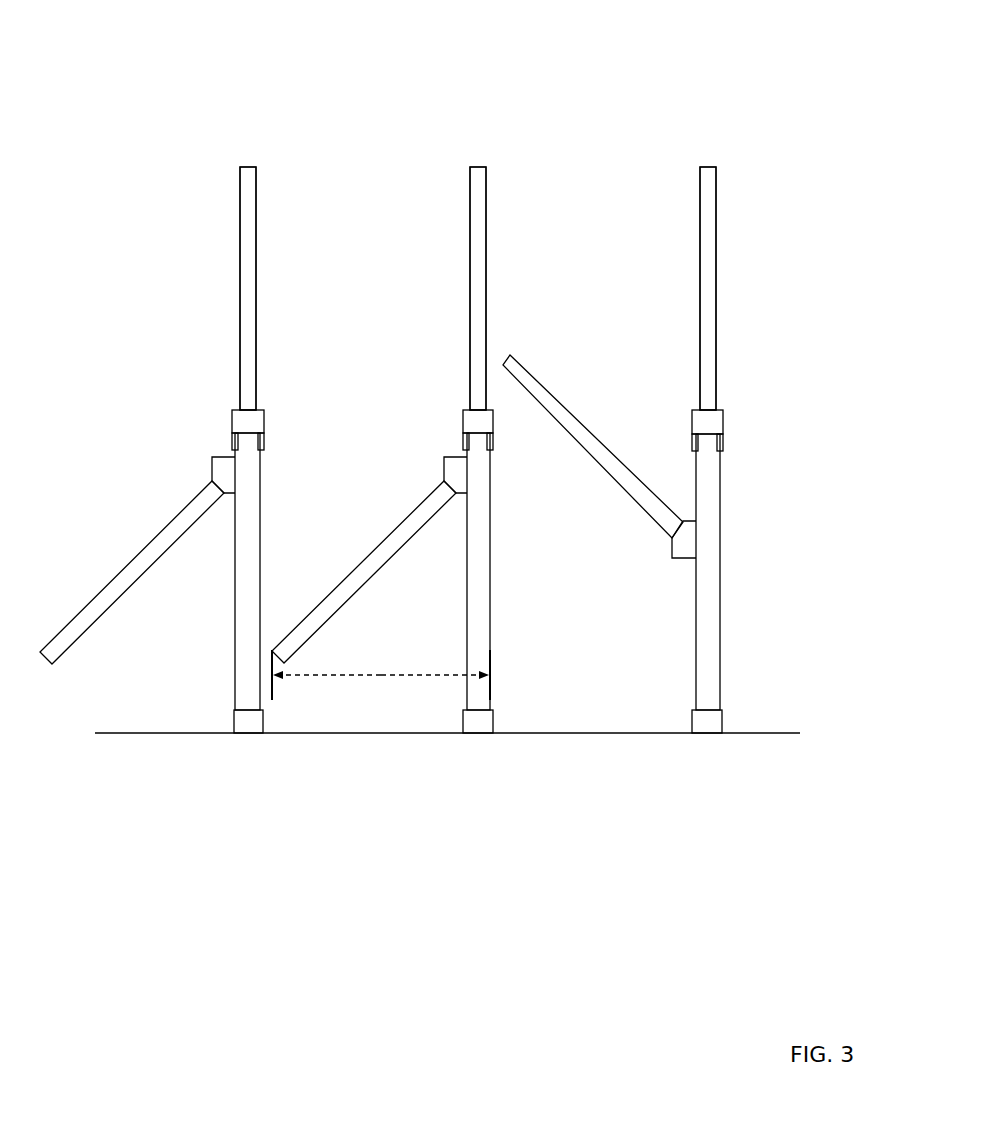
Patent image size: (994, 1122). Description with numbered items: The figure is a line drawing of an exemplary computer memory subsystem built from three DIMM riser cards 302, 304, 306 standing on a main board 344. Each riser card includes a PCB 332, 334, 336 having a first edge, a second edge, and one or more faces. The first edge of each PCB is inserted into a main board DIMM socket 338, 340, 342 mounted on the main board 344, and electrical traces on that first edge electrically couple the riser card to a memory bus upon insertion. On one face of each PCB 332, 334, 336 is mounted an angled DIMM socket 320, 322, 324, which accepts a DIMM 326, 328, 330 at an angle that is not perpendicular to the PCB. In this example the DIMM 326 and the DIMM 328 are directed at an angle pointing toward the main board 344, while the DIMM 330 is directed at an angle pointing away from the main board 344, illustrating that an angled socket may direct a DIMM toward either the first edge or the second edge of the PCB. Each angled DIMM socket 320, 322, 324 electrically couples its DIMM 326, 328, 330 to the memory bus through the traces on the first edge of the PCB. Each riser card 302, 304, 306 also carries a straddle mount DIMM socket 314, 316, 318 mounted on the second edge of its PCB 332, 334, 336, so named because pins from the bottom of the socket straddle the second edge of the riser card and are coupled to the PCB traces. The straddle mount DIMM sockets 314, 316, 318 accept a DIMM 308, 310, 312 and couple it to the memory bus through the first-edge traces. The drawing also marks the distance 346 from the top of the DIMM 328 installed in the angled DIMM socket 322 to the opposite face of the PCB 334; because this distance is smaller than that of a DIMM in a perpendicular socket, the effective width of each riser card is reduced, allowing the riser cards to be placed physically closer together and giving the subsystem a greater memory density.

The riser card 302 is at (249, 98).
The riser card 304 is at (480, 98).
The riser card 306 is at (708, 98).
The DIMM 308 is at (258, 221).
The DIMM 310 is at (488, 221).
The DIMM 312 is at (718, 221).
The straddle mount DIMM socket 314 is at (265, 410).
The straddle mount DIMM socket 316 is at (497, 433).
The straddle mount DIMM socket 318 is at (725, 410).
The angled DIMM socket 320 is at (212, 457).
The angled DIMM socket 322 is at (444, 457).
The angled DIMM socket 324 is at (672, 558).
The DIMM 326 is at (134, 557).
The DIMM 328 is at (376, 549).
The DIMM 330 is at (603, 433).
The PCB 332 is at (235, 600).
The PCB 334 is at (467, 600).
The PCB 336 is at (720, 600).
The main board DIMM socket 338 is at (229, 725).
The main board DIMM socket 340 is at (497, 730).
The main board DIMM socket 342 is at (726, 730).
The main board 344 is at (400, 742).
The distance 346 is at (381, 675).